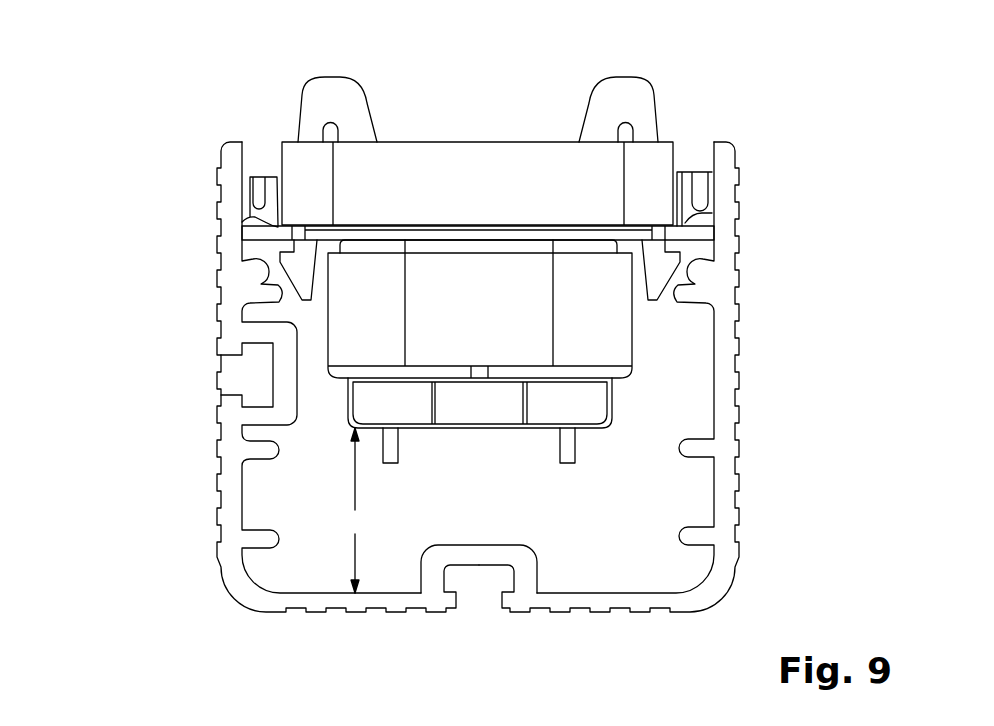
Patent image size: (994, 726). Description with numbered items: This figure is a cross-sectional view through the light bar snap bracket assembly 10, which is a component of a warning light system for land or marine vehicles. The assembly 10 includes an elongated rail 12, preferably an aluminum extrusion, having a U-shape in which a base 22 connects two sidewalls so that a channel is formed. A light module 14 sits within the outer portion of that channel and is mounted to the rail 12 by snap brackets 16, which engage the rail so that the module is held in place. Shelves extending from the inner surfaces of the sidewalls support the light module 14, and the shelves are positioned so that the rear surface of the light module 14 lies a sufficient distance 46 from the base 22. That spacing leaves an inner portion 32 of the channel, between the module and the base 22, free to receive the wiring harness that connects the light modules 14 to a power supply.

The light bar snap bracket assembly 10 is at (127, 163).
The rail 12 is at (222, 555).
The light module 14 is at (492, 140).
The snap bracket 16 is at (633, 76).
The base 22 is at (573, 615).
The inner portion 32 is at (645, 510).
The distance 46 is at (344, 510).